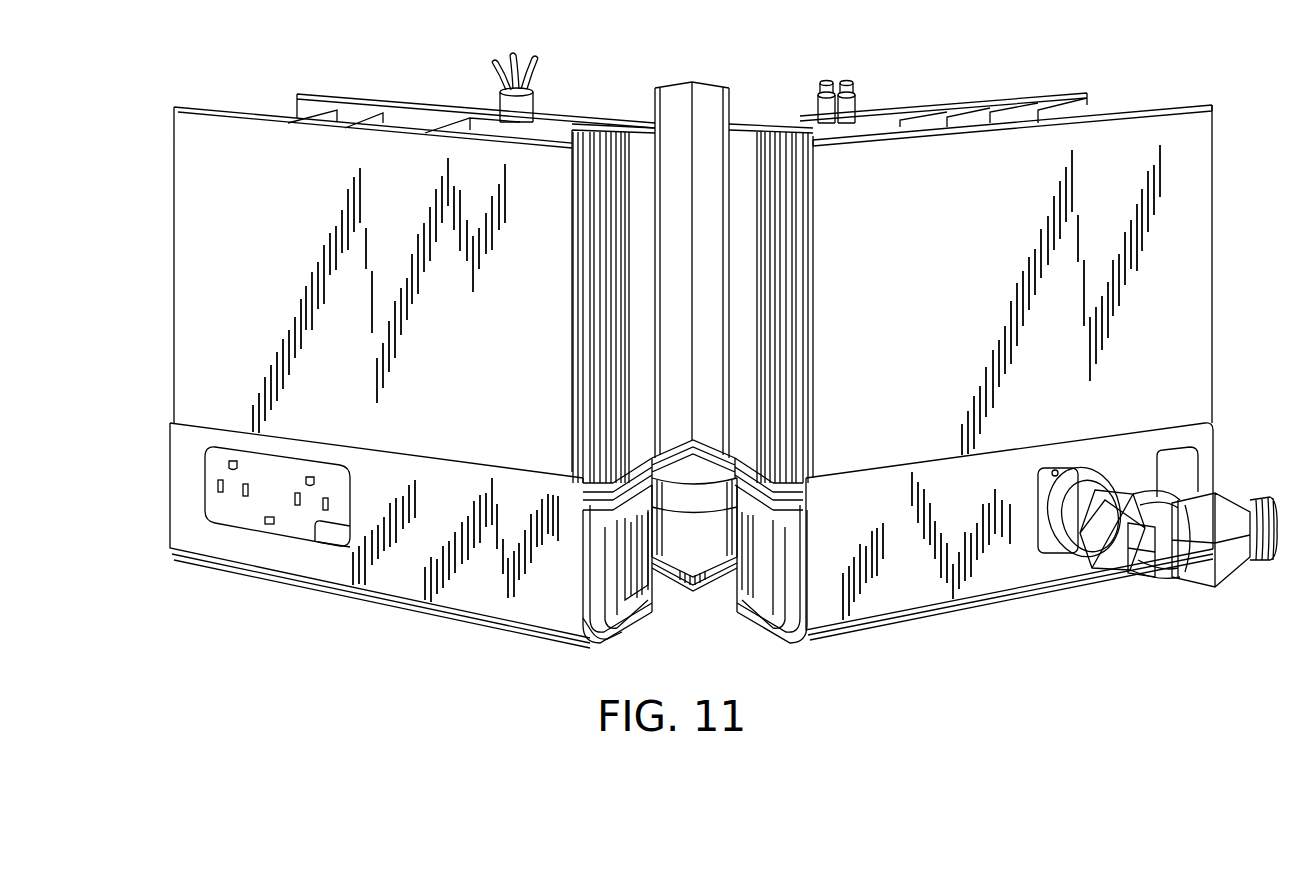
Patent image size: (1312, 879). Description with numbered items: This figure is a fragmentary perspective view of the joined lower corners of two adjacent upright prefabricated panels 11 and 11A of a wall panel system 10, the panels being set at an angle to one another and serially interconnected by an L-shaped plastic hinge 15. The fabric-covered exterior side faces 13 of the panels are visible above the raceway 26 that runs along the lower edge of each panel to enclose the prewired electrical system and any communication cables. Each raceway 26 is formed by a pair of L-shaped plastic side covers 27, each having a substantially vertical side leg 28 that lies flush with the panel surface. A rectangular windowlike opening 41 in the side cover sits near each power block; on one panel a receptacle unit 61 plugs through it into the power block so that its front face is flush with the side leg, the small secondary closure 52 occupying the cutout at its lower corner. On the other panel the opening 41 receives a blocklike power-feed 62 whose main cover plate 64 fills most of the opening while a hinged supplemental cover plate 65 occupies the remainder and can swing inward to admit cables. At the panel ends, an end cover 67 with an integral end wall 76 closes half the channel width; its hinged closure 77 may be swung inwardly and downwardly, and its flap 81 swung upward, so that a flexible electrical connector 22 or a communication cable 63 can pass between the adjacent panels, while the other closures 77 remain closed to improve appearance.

The wall panel system 10 is at (912, 76).
The wall panel 11 is at (1216, 150).
The wall panel 11A is at (170, 190).
The exterior side face 13 is at (1007, 308).
The L-shaped plastic hinge 15 is at (700, 97).
The flexible electrical connector 22 is at (683, 545).
The raceway 26 is at (1224, 452).
The side cover 27 is at (411, 562).
The side leg 28 is at (890, 515).
The windowlike opening 41 is at (1056, 468).
The secondary closure 52 is at (330, 536).
The receptacle unit 61 is at (240, 446).
The power-feed 62 is at (1153, 596).
The communication cable 63 is at (710, 578).
The main cover plate 64 is at (1060, 549).
The supplemental cover plate 65 is at (1183, 480).
The end cover 67 is at (578, 607).
The end wall 76 is at (628, 632).
The closure 77 is at (623, 565).
The flap 81 is at (648, 525).